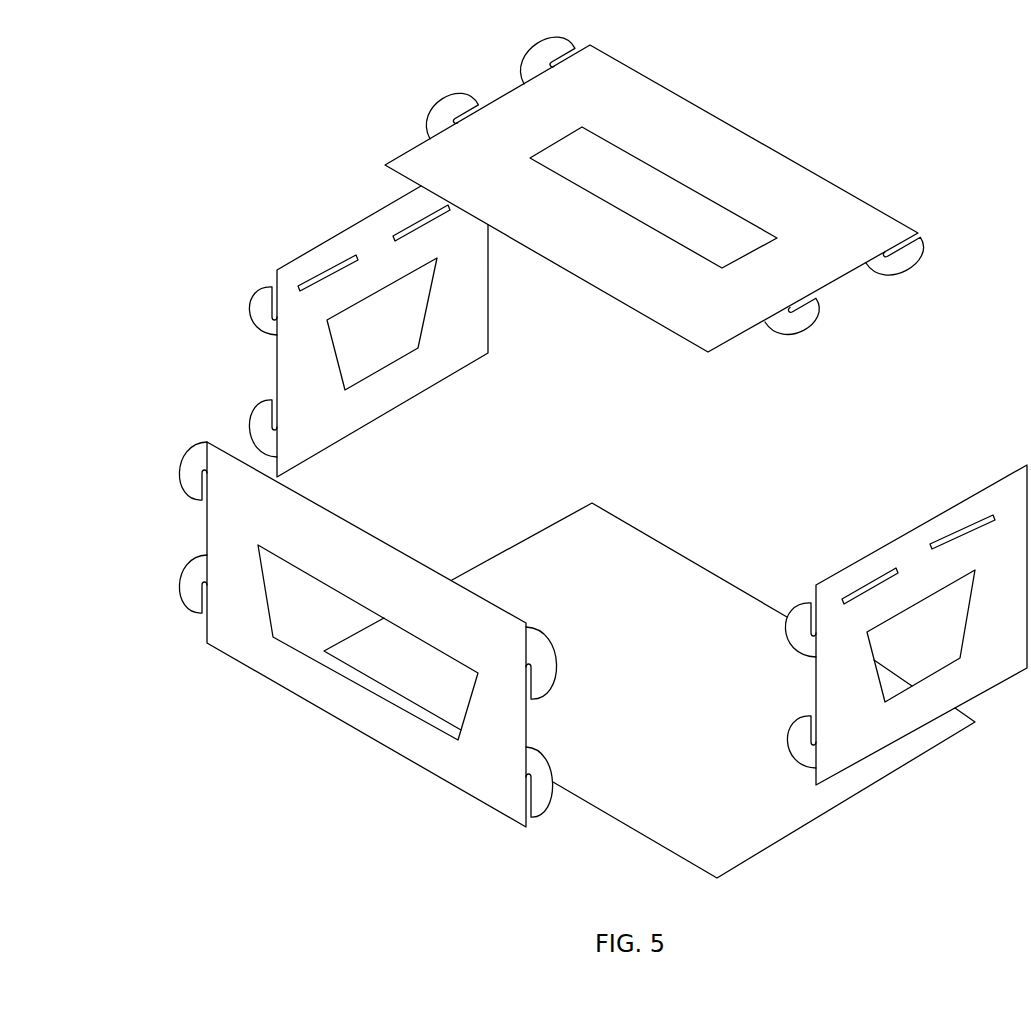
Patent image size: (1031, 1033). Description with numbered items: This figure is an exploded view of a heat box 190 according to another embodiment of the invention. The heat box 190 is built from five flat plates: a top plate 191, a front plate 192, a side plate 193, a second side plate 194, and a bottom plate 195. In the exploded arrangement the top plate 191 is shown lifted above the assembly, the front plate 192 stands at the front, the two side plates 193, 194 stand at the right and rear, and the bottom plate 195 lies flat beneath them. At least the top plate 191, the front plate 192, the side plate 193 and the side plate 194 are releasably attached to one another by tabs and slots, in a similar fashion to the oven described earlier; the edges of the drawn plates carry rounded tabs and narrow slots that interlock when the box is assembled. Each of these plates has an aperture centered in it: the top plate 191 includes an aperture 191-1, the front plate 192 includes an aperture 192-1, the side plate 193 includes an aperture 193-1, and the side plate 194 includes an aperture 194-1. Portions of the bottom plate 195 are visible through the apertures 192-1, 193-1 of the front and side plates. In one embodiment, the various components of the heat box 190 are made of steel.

The heat box 190 is at (159, 70).
The top plate 191 is at (705, 144).
The aperture 191-1 is at (658, 196).
The front plate 192 is at (381, 580).
The aperture 192-1 is at (328, 616).
The side plate 193 is at (1016, 634).
The aperture 193-1 is at (937, 650).
The side plate 194 is at (468, 336).
The aperture 194-1 is at (398, 336).
The bottom plate 195 is at (642, 650).